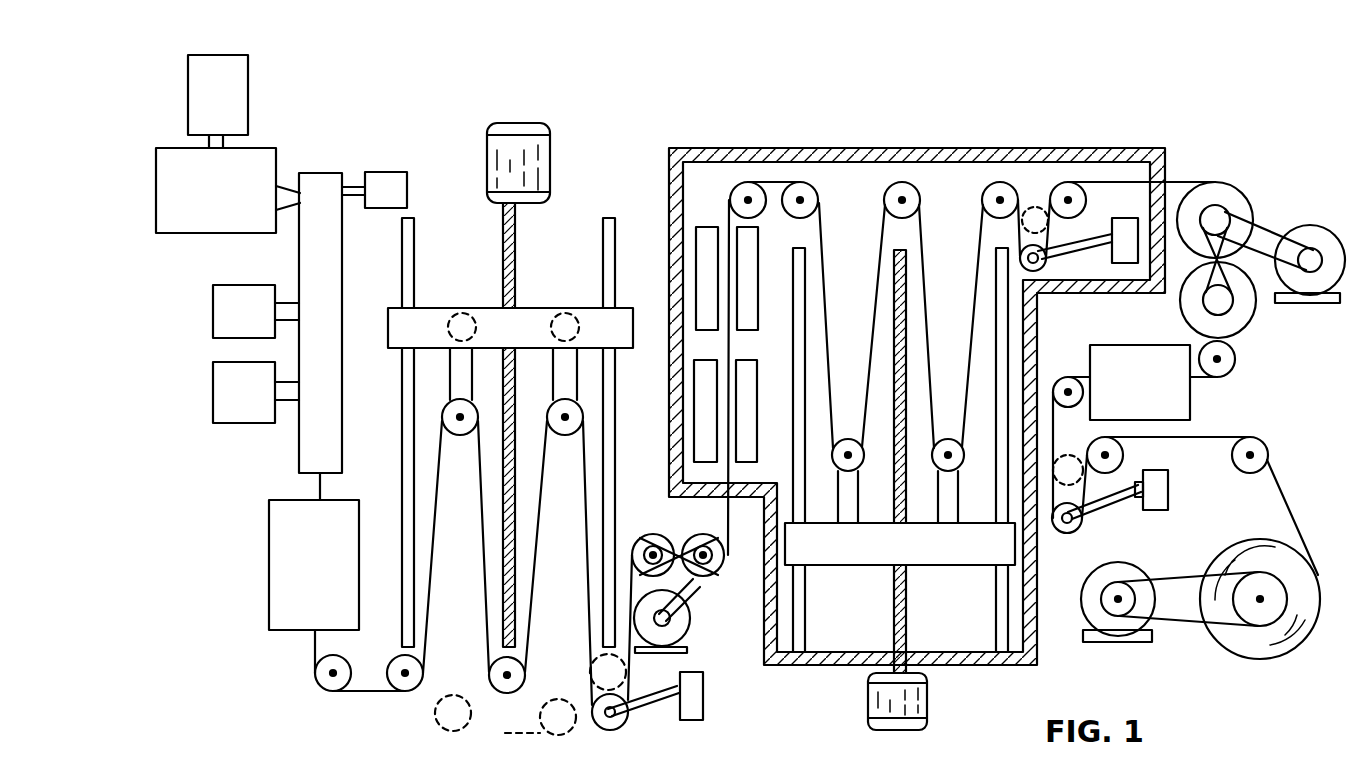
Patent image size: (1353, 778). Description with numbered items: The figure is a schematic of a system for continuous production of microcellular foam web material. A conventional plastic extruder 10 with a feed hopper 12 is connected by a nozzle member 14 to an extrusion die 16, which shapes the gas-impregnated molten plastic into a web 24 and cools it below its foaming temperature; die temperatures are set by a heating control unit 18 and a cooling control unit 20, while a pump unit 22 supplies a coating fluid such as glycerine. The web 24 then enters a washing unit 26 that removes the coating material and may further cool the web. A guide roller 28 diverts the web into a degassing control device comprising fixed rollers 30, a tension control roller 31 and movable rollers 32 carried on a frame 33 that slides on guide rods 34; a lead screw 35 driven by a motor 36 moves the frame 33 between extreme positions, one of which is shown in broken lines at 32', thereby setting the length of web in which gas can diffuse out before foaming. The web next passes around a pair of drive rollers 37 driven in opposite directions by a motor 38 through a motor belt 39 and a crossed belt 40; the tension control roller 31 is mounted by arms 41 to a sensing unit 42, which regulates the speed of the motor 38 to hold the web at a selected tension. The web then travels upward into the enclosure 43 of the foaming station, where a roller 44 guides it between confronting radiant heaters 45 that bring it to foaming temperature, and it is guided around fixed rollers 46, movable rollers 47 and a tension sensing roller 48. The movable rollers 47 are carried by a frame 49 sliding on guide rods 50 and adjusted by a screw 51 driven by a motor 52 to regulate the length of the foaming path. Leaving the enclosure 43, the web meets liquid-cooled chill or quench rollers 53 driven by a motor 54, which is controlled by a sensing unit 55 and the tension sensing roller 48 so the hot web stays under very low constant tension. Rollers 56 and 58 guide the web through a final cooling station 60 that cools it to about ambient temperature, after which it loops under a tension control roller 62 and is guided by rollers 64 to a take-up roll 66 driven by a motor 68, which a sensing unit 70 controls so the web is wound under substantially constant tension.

The plastic extruder 10 is at (241, 165).
The feed hopper 12 is at (232, 84).
The nozzle member 14 is at (283, 195).
The extrusion die 16 is at (317, 182).
The heating control unit 18 is at (380, 180).
The cooling control unit 20 is at (228, 390).
The pump unit 22 is at (228, 303).
The web 24 is at (320, 490).
The washing unit 26 is at (269, 540).
The guide roller 28 is at (319, 684).
The fixed rollers 30 is at (423, 685).
The tension control roller 31 is at (626, 673).
The movable rollers 32 is at (512, 412).
The extreme position of movable rollers 32' is at (505, 719).
The frame 33 is at (388, 328).
The guide rods 34 is at (402, 247).
The lead screw 35 is at (503, 250).
The motor 36 is at (550, 168).
The drive rollers 37 is at (690, 577).
The motor 38 is at (690, 630).
The motor belt 39 is at (690, 598).
The crossed belt 40 is at (665, 533).
The arms 41 is at (626, 722).
The sensing unit 42 is at (703, 697).
The enclosure 43 is at (669, 197).
The roller 44 is at (748, 182).
The radiant heaters 45 is at (720, 283).
The fixed rollers 46 is at (886, 194).
The movable rollers 47 is at (850, 438).
The tension sensing roller 48 is at (1046, 262).
The frame 49 is at (1017, 548).
The guide rods 50 is at (805, 602).
The screw 51 is at (906, 294).
The motor 52 is at (927, 700).
The chill or quench rollers 53 is at (1188, 250).
The motor 54 is at (1312, 235).
The sensing unit 55 is at (1113, 221).
The roller 56 is at (1230, 372).
The roller 58 is at (1068, 377).
The final cooling station 60 is at (1113, 345).
The tension control roller 62 is at (1078, 528).
The rollers 64 is at (1122, 452).
The take-up roll 66 is at (1216, 562).
The motor 68 is at (1082, 599).
The sensing unit 70 is at (1168, 474).